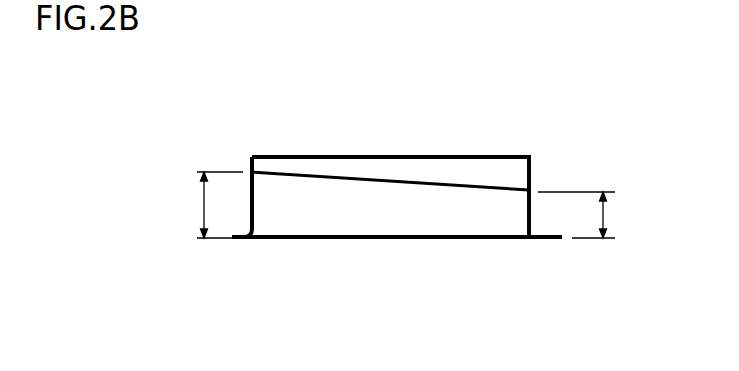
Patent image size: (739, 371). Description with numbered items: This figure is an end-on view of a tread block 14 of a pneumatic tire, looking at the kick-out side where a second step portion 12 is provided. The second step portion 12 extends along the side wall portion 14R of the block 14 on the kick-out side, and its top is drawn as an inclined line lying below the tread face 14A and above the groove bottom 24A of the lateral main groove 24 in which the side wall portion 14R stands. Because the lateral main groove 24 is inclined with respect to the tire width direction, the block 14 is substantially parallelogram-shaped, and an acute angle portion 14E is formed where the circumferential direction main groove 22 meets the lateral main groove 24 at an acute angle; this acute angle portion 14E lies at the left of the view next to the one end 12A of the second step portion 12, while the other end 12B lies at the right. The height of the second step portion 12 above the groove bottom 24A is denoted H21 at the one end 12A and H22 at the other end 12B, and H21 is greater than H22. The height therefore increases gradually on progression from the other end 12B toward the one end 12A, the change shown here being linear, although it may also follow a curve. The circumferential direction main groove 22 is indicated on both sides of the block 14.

The second step portion 12 is at (472, 188).
The one end 12A is at (251, 171).
The other end 12B is at (531, 158).
The block 14 is at (323, 156).
The tread face 14A is at (356, 156).
The acute angle portion 14E is at (281, 156).
The side wall portion 14R is at (446, 222).
The circumferential direction main groove 22 is at (227, 193).
The lateral main groove 24 is at (370, 216).
The groove bottom 24A is at (295, 235).
The height of the one end H21 is at (199, 205).
The height of the other end H22 is at (596, 215).